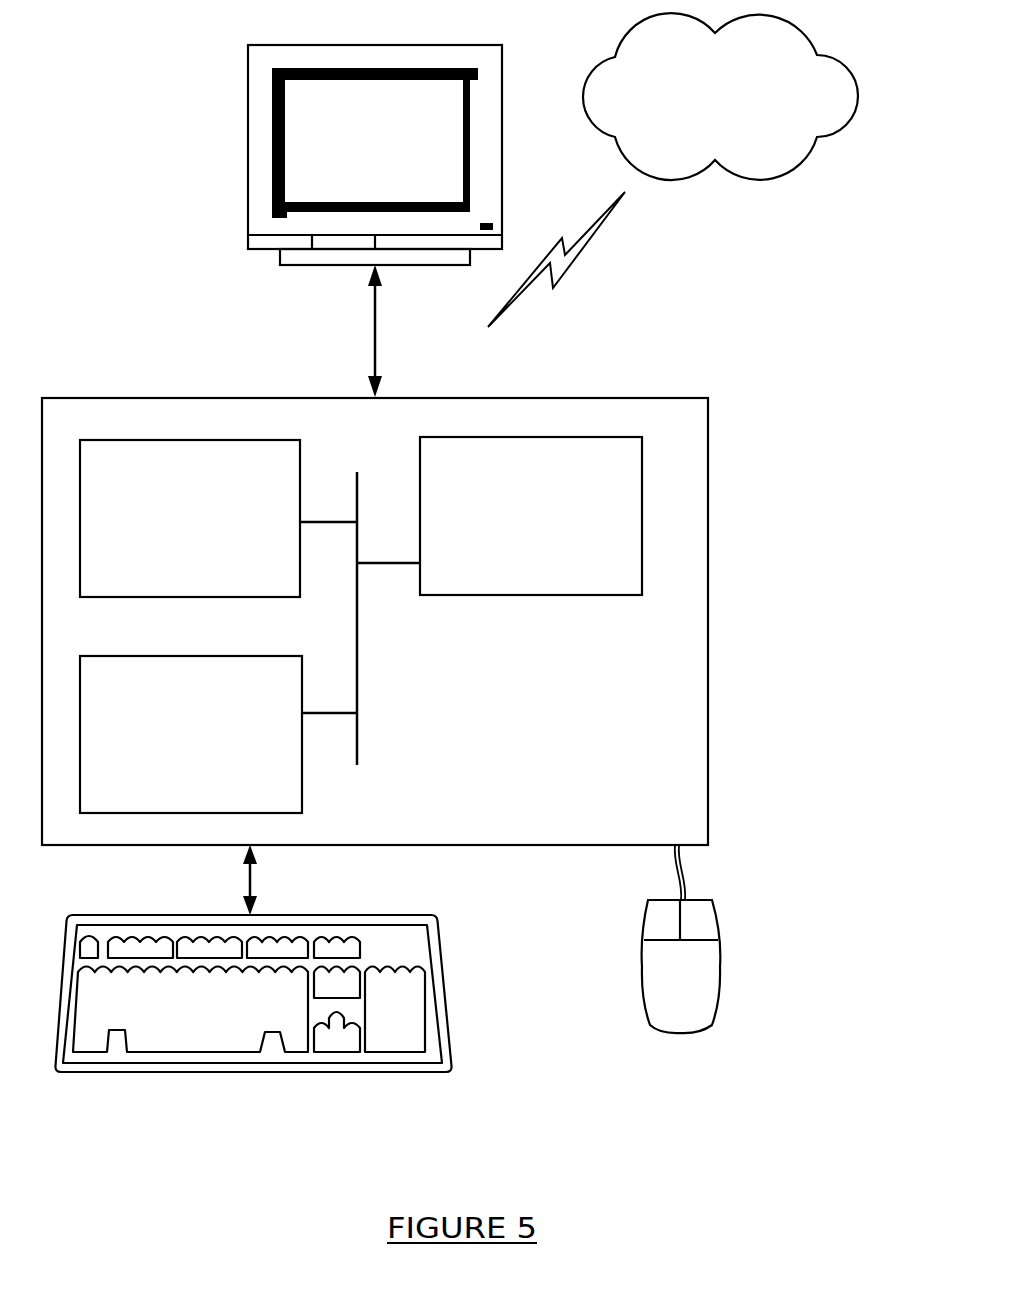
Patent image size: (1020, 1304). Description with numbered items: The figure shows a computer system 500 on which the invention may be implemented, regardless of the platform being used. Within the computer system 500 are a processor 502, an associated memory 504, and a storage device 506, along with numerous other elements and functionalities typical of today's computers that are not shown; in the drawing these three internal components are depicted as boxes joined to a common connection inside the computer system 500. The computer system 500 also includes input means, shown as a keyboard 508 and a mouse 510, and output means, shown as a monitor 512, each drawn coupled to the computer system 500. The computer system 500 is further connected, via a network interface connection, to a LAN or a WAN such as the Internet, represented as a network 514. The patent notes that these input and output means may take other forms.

The computer system 500 is at (740, 631).
The processor 502 is at (509, 532).
The memory 504 is at (171, 528).
The storage device 506 is at (167, 746).
The keyboard 508 is at (164, 1031).
The mouse 510 is at (659, 986).
The monitor 512 is at (354, 164).
The network (LAN or WAN) 514 is at (686, 119).